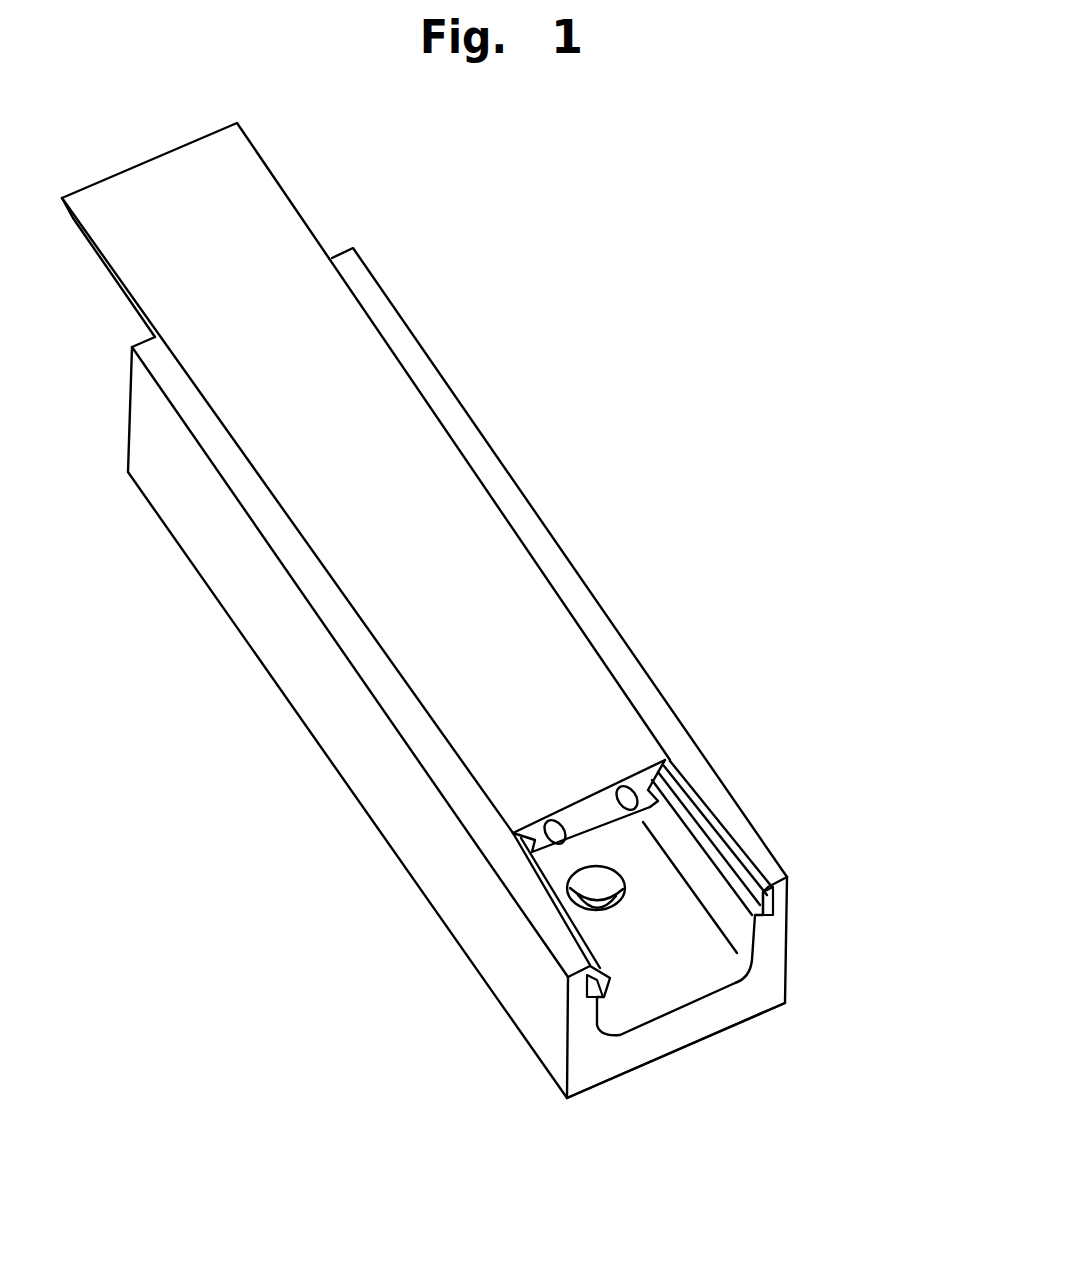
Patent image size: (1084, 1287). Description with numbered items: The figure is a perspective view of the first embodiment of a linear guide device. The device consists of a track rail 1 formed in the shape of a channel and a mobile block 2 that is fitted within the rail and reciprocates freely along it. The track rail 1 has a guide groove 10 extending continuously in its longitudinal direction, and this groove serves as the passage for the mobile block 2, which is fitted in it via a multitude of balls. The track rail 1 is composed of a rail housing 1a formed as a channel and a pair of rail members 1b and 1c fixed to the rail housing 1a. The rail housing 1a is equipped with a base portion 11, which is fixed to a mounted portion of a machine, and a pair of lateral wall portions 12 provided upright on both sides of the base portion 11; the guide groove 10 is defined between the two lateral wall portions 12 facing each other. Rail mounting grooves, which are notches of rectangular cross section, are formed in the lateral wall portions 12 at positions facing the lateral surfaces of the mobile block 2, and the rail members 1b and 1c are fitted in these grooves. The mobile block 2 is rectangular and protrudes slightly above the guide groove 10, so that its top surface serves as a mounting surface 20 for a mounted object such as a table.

The track rail 1 is at (400, 893).
The rail housing 1a is at (787, 1022).
The rail member 1b is at (593, 990).
The rail member 1c is at (763, 910).
The mobile block 2 is at (305, 187).
The guide groove 10 is at (688, 978).
The base portion 11 is at (642, 1055).
The lateral wall portions 12 is at (768, 935).
The mounting surface 20 is at (452, 498).